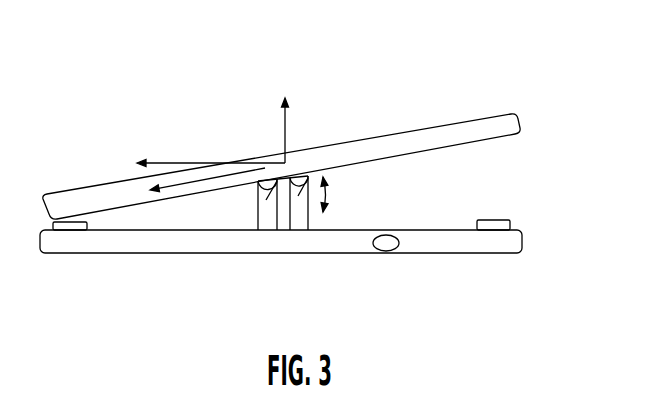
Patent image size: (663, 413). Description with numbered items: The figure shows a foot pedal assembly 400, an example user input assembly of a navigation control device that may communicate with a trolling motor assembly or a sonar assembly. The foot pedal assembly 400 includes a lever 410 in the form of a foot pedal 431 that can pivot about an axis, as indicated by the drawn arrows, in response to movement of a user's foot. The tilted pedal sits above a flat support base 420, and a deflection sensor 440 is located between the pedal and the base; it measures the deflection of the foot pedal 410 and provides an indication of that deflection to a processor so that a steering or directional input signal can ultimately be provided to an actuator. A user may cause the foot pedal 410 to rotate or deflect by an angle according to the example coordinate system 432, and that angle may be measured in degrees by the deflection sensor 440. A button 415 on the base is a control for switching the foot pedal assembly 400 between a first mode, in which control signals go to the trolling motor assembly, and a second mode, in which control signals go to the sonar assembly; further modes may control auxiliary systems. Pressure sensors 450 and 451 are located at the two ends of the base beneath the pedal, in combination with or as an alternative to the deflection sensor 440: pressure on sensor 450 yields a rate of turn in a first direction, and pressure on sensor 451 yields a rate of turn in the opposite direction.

The foot pedal assembly 400 is at (418, 66).
The lever 410 is at (447, 137).
The button 415 is at (382, 250).
The base 420 is at (435, 240).
The foot pedal 431 is at (260, 106).
The example coordinate system 432 is at (220, 170).
The deflection sensor 440 is at (282, 222).
The pressure sensor 450 is at (77, 230).
The pressure sensor 451 is at (492, 218).